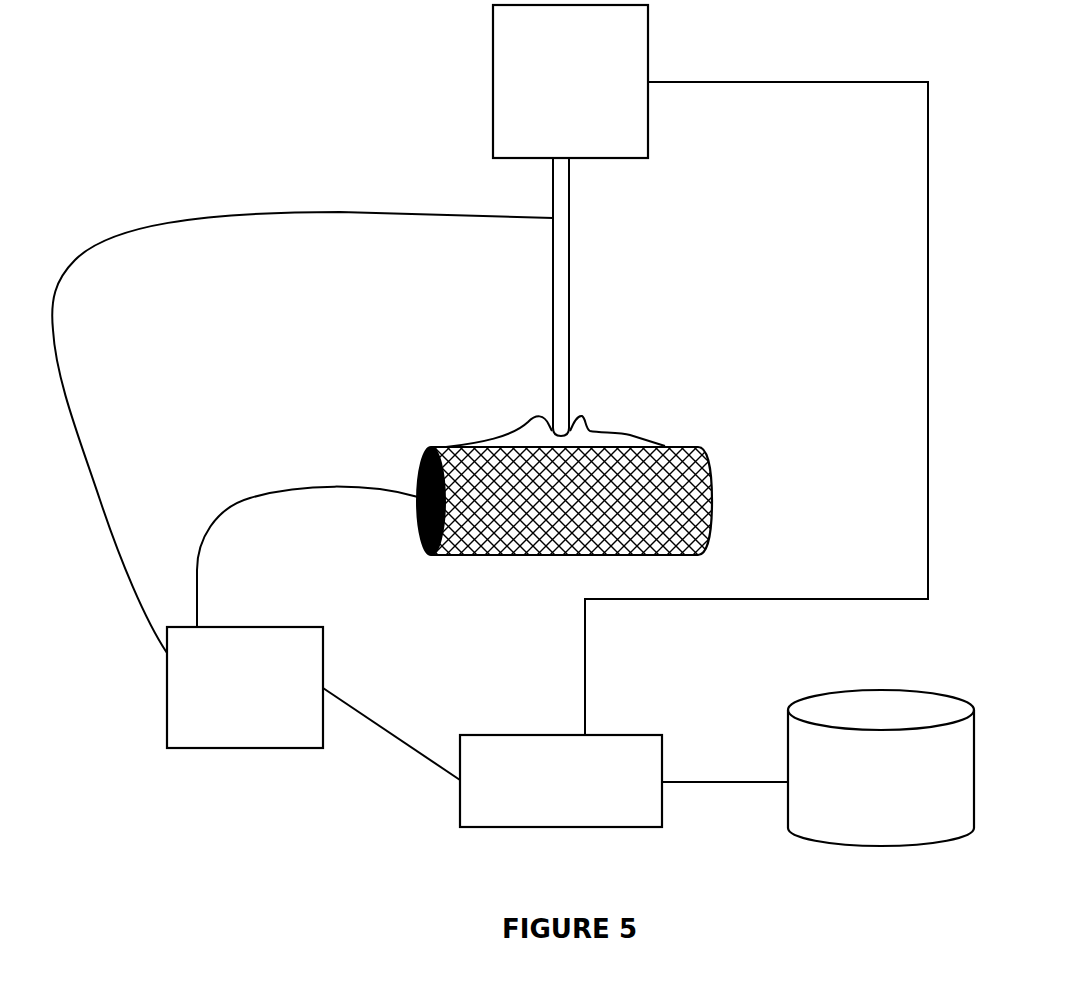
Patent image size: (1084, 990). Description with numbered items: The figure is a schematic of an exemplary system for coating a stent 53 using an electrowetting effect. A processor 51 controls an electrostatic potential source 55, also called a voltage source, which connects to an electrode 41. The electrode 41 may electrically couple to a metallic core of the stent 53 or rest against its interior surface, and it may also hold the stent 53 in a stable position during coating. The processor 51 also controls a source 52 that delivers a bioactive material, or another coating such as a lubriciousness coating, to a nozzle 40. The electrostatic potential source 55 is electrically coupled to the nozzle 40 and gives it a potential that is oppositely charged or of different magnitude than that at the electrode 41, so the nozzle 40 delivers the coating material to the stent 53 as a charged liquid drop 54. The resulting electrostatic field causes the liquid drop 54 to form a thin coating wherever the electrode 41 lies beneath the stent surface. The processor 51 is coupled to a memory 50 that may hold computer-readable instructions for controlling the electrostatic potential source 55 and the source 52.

The source 52 is at (570, 81).
The nozzle 40 is at (570, 356).
The liquid drop 54 is at (590, 431).
The stent 53 is at (445, 432).
The electrode 41 is at (242, 502).
The electrostatic potential source 55 is at (245, 687).
The processor 51 is at (561, 781).
The memory 50 is at (881, 768).